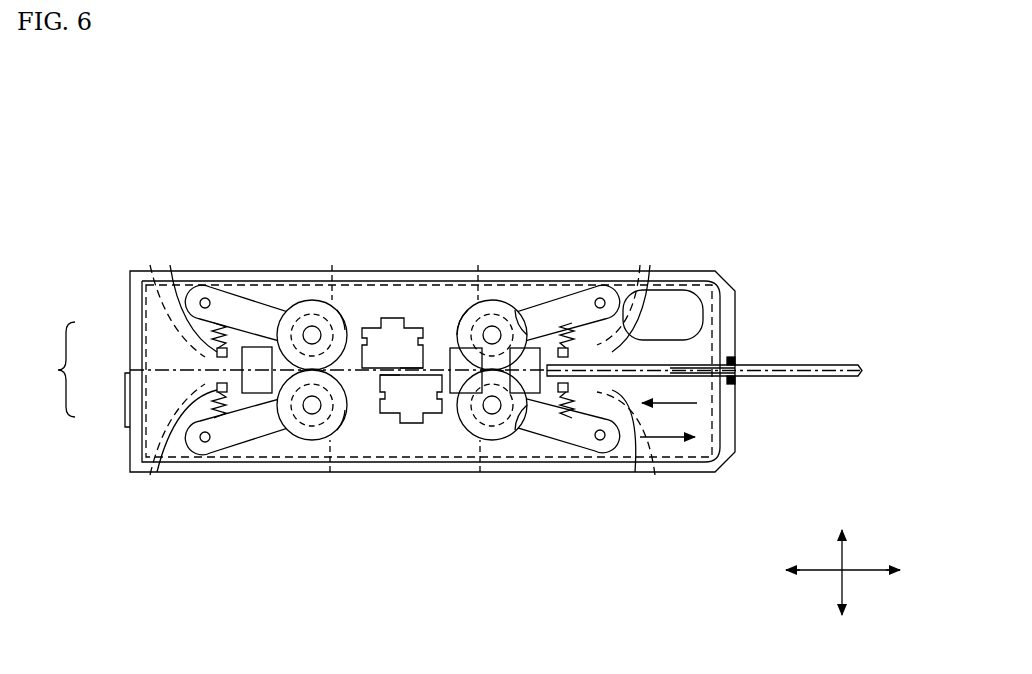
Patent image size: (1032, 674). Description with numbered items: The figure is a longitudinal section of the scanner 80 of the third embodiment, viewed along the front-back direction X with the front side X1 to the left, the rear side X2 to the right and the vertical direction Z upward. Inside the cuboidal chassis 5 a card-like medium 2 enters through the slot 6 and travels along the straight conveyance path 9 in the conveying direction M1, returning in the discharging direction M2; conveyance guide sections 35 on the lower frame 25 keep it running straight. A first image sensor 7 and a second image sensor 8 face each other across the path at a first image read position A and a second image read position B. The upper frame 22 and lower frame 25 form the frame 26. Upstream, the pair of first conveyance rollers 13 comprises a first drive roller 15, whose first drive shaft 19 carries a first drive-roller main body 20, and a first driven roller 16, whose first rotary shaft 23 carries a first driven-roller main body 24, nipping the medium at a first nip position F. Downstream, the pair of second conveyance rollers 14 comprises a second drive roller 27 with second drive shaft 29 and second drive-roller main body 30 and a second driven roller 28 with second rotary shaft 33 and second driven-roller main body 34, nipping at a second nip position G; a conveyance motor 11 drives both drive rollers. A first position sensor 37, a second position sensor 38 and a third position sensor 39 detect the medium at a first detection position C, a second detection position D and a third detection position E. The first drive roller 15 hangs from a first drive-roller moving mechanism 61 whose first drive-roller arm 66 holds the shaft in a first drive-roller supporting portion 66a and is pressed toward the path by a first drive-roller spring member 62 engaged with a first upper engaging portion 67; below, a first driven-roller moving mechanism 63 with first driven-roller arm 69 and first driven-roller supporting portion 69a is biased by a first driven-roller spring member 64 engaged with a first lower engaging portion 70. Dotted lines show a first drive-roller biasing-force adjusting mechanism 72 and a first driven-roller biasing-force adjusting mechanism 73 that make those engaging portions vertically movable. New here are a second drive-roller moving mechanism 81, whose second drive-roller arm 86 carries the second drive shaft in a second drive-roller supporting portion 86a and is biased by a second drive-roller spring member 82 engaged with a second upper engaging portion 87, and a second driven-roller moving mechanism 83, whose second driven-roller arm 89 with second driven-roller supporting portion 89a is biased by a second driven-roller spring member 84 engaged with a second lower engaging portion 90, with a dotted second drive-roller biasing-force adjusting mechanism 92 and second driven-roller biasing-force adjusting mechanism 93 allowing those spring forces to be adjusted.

The card-like medium 2 is at (834, 361).
The chassis 5 is at (138, 266).
The slot 6 is at (737, 360).
The first image sensor 7 is at (432, 415).
The second image sensor 8 is at (392, 330).
The conveyance path 9 is at (650, 265).
The conveyance motor 11 is at (667, 266).
The pair of first conveyance rollers 13 is at (524, 442).
The pair of second conveyance rollers 14 is at (359, 390).
The first drive roller 15 is at (515, 265).
The first driven roller 16 is at (543, 432).
The first drive shaft 19 is at (485, 327).
The first drive-roller main body 20 is at (500, 315).
The upper frame 22 is at (142, 330).
The first rotary shaft 23 is at (485, 412).
The first driven-roller main body 24 is at (495, 426).
The lower frame 25 is at (142, 412).
The frame 26 is at (54, 369).
The second drive roller 27 is at (341, 303).
The second driven roller 28 is at (335, 436).
The second drive shaft 29 is at (304, 326).
The second drive-roller main body 30 is at (312, 300).
The second rotary shaft 33 is at (303, 412).
The second driven-roller main body 34 is at (305, 426).
The conveyance guide sections 35 is at (708, 280).
The first position sensor 37 is at (515, 305).
The second position sensor 38 is at (448, 340).
The third position sensor 39 is at (292, 316).
The first drive-roller moving mechanism 61 is at (574, 286).
The first drive-roller spring member 62 is at (602, 296).
The first driven-roller moving mechanism 63 is at (582, 456).
The first driven-roller spring member 64 is at (602, 445).
The first drive-roller arm 66 is at (566, 330).
The first drive-roller supporting portion 66a is at (478, 265).
The first upper engaging portion 67 is at (570, 348).
The first driven-roller arm 69 is at (567, 414).
The first driven-roller supporting portion 69a is at (480, 472).
The first lower engaging portion 70 is at (635, 472).
The first drive-roller biasing-force adjusting mechanism 72 is at (640, 265).
The first driven-roller biasing-force adjusting mechanism 73 is at (655, 472).
The scanner 80 is at (752, 185).
The second drive-roller moving mechanism 81 is at (231, 287).
The second drive-roller spring member 82 is at (200, 296).
The second driven-roller moving mechanism 83 is at (221, 457).
The second driven-roller spring member 84 is at (200, 444).
The second drive-roller arm 86 is at (222, 330).
The second drive-roller supporting portion 86a is at (332, 265).
The second upper engaging portion 87 is at (170, 265).
The second driven-roller arm 89 is at (220, 410).
The second driven-roller supporting portion 89a is at (330, 472).
The second lower engaging portion 90 is at (157, 472).
The second drive-roller biasing-force adjusting mechanism 92 is at (150, 265).
The second driven-roller biasing-force adjusting mechanism 93 is at (134, 470).
The first image read position A is at (415, 360).
The second image read position B is at (393, 378).
The first detection position C is at (525, 379).
The second detection position D is at (465, 379).
The third detection position E is at (257, 379).
The first nip position F is at (493, 380).
The second nip position G is at (312, 380).
The conveying direction M1 is at (700, 395).
The discharging direction M2 is at (700, 433).
The front-back direction X is at (843, 556).
The front side X1 is at (777, 570).
The rear side X2 is at (910, 570).
The vertical direction Z is at (843, 558).